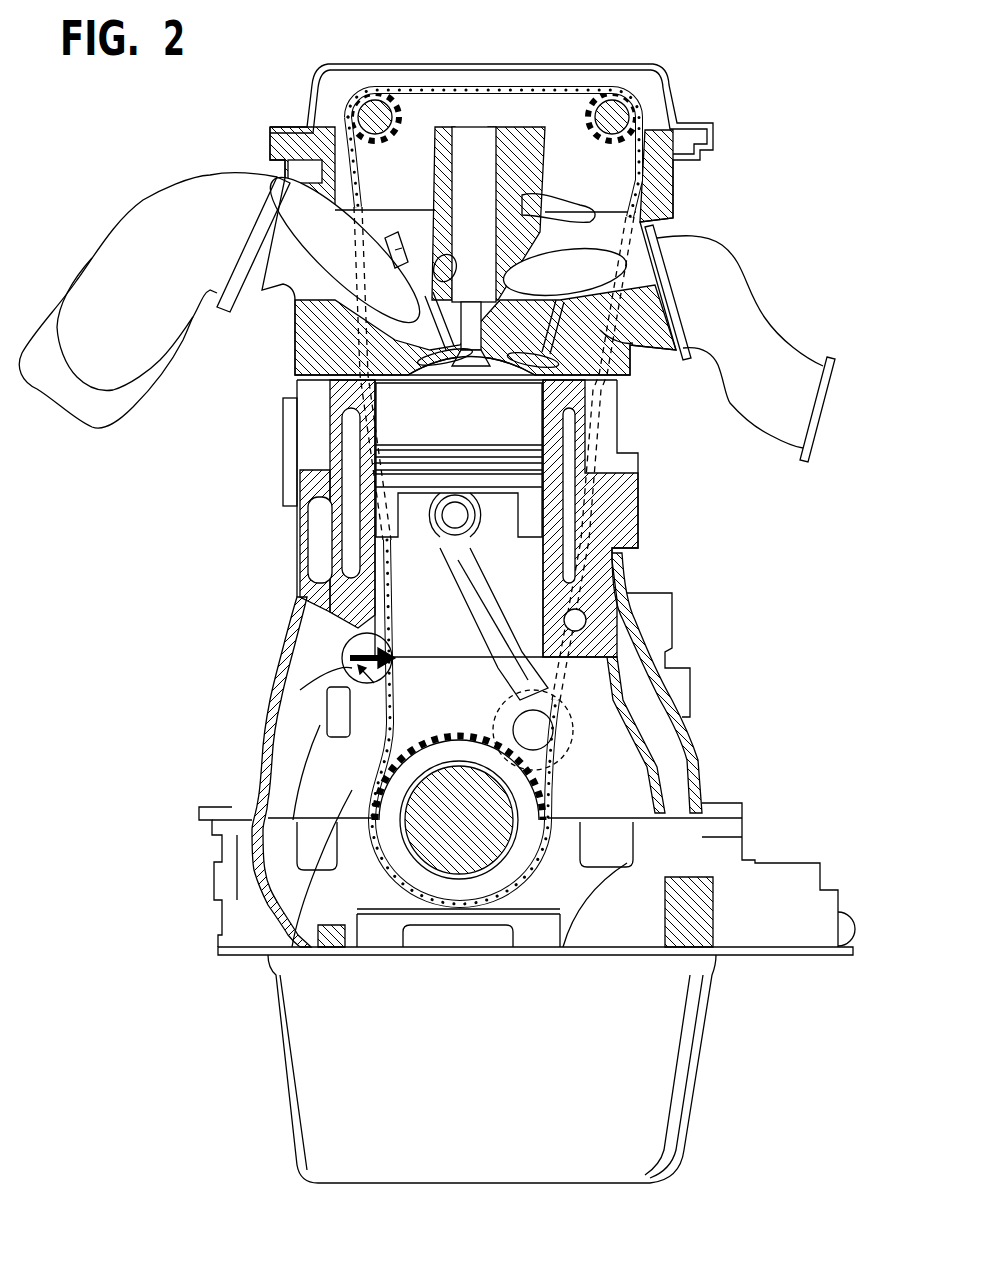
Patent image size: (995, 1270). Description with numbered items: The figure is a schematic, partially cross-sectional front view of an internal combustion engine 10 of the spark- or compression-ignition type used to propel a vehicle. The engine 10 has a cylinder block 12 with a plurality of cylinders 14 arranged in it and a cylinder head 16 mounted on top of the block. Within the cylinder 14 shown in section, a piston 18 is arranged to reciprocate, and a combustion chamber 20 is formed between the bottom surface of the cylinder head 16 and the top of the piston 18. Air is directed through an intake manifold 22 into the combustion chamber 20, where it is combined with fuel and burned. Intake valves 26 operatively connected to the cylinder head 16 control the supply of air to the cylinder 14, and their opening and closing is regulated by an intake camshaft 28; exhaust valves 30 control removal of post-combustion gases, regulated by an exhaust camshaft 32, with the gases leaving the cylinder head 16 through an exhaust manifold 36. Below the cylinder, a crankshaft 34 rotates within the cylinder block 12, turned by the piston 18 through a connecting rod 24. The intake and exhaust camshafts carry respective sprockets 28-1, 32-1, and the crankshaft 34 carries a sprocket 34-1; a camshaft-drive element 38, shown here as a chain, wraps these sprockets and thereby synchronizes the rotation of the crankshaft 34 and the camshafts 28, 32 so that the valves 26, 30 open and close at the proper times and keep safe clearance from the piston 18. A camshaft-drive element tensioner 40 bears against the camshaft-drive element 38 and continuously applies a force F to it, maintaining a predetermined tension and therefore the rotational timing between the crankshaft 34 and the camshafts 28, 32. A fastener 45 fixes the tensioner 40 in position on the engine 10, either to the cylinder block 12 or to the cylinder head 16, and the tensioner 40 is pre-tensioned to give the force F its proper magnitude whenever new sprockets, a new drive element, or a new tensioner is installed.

The internal combustion engine 10 is at (771, 242).
The cylinder block 12 is at (640, 512).
The cylinder 14 is at (410, 588).
The cylinder head 16 is at (262, 222).
The piston 18 is at (372, 416).
The combustion chamber 20 is at (420, 432).
The intake manifold 22 is at (50, 295).
The connecting rod 24 is at (487, 598).
The intake valve 26 is at (365, 350).
The intake camshaft 28 is at (368, 113).
The intake camshaft sprocket 28-1 is at (383, 107).
The exhaust valve 30 is at (605, 362).
The exhaust camshaft 32 is at (614, 113).
The exhaust camshaft sprocket 32-1 is at (583, 107).
The crankshaft 34 is at (473, 812).
The crankshaft sprocket 34-1 is at (413, 764).
The exhaust manifold 36 is at (797, 407).
The camshaft-drive element 38 is at (383, 722).
The camshaft-drive element tensioner 40 is at (353, 638).
The fastener 45 is at (350, 702).
The force F is at (345, 658).